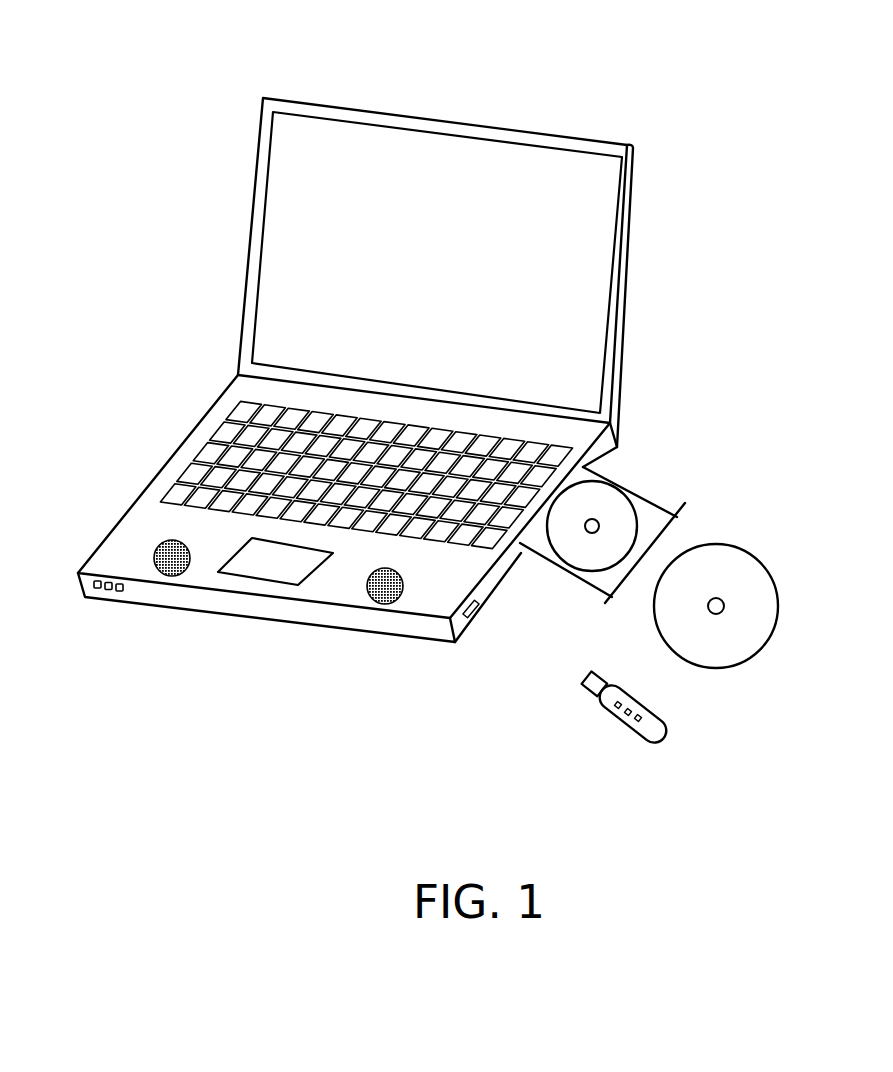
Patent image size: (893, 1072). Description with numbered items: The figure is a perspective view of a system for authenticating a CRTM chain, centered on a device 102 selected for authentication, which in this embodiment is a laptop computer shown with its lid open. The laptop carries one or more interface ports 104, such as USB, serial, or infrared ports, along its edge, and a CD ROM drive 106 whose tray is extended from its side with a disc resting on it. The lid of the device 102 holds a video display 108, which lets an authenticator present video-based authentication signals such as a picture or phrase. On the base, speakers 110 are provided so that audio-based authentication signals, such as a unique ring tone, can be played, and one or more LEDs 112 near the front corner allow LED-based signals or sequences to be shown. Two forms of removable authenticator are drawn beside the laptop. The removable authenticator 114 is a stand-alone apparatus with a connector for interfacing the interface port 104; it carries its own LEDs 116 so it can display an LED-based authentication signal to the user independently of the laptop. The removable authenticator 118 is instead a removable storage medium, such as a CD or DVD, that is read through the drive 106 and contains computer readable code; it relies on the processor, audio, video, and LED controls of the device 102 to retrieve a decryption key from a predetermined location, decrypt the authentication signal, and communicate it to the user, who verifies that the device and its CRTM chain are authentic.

The device 102 is at (364, 357).
The interface port 104 is at (483, 607).
The CD ROM drive 106 is at (623, 482).
The video display 108 is at (633, 143).
The speakers 110 is at (383, 605).
The LEDs 112 is at (96, 593).
The removable authenticator 114 is at (666, 748).
The LEDs 116 is at (653, 705).
The removable authenticator 118 is at (713, 545).